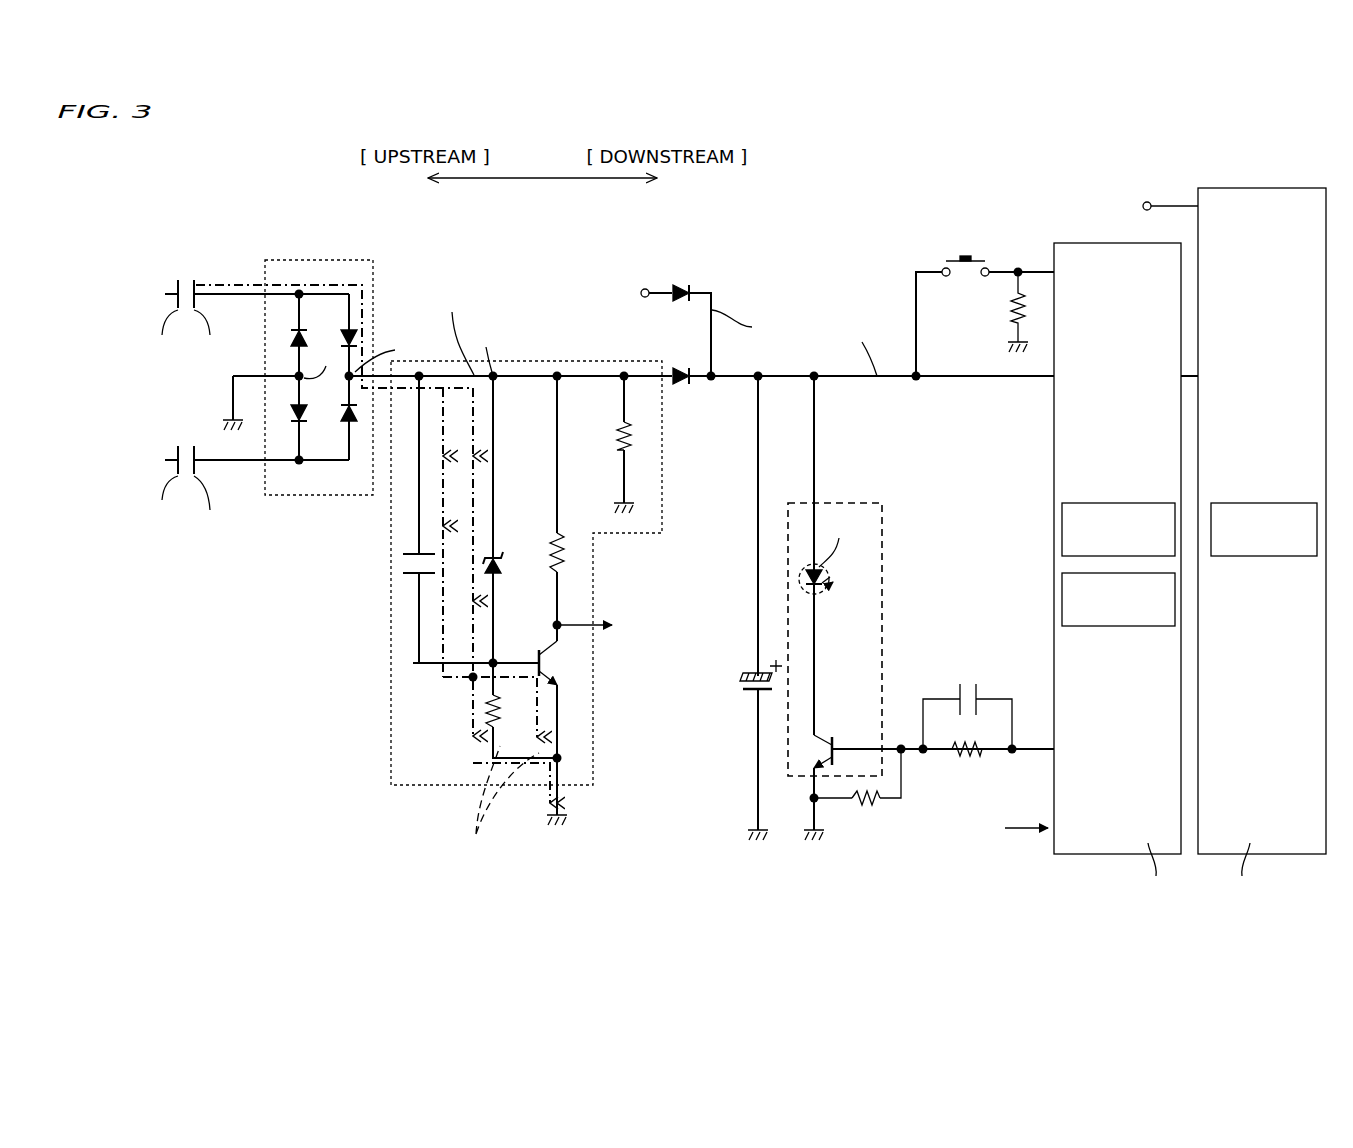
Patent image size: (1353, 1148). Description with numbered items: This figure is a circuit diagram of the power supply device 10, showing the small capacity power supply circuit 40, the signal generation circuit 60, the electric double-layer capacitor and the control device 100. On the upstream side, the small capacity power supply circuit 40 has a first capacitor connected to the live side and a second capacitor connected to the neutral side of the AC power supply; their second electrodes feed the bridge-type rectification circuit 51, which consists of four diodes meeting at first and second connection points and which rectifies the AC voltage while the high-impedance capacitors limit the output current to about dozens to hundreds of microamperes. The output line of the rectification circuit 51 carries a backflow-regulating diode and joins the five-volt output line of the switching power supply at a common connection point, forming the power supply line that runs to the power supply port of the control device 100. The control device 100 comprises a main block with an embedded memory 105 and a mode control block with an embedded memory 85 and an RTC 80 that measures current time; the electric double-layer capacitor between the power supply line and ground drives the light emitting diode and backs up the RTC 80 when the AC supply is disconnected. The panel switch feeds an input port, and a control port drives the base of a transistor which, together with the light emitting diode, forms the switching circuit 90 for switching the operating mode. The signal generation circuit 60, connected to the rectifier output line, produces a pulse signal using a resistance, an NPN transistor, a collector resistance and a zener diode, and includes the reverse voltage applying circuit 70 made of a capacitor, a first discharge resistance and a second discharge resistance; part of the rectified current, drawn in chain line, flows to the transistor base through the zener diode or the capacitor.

The power supply device 10 is at (763, 238).
The small capacity power supply circuit 40 is at (240, 268).
The rectification circuit 51 is at (330, 258).
The signal generation circuit 60 is at (535, 361).
The reverse voltage applying circuit 70 is at (636, 471).
The RTC 80 is at (1062, 592).
The memory 85 is at (1062, 531).
The switching circuit 90 is at (882, 572).
The control device 100 is at (1257, 886).
The memory 105 is at (1286, 503).